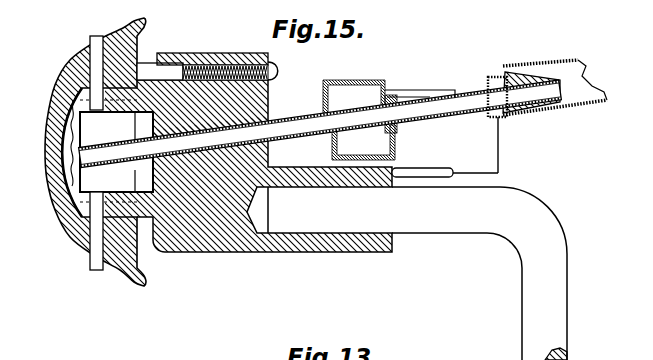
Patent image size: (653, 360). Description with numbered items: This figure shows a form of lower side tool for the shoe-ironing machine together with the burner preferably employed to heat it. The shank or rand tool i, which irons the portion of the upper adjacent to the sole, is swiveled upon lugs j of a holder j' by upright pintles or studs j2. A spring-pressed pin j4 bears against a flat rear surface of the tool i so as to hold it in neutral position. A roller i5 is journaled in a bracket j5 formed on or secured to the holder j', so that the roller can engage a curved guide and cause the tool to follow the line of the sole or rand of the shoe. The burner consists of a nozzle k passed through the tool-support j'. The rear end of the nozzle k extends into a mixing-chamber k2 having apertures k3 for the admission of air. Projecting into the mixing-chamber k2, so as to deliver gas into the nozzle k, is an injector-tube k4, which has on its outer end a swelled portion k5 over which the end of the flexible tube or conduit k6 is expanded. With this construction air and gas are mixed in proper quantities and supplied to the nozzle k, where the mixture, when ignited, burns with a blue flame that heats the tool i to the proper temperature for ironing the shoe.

The shank or rand tool i is at (45, 149).
The roll i5 is at (77, 191).
The lugs j is at (131, 144).
The holder j' is at (248, 182).
The upright pintles or studs j2 is at (98, 48).
The spring-pressed pin j4 is at (181, 58).
The bracket j5 is at (483, 147).
The nozzle k is at (128, 156).
The mixing-chamber k2 is at (346, 95).
The apertures k3 is at (389, 89).
The injector-tube k4 is at (491, 79).
The swelled portion k5 is at (527, 75).
The flexible tube or conduit k6 is at (587, 103).